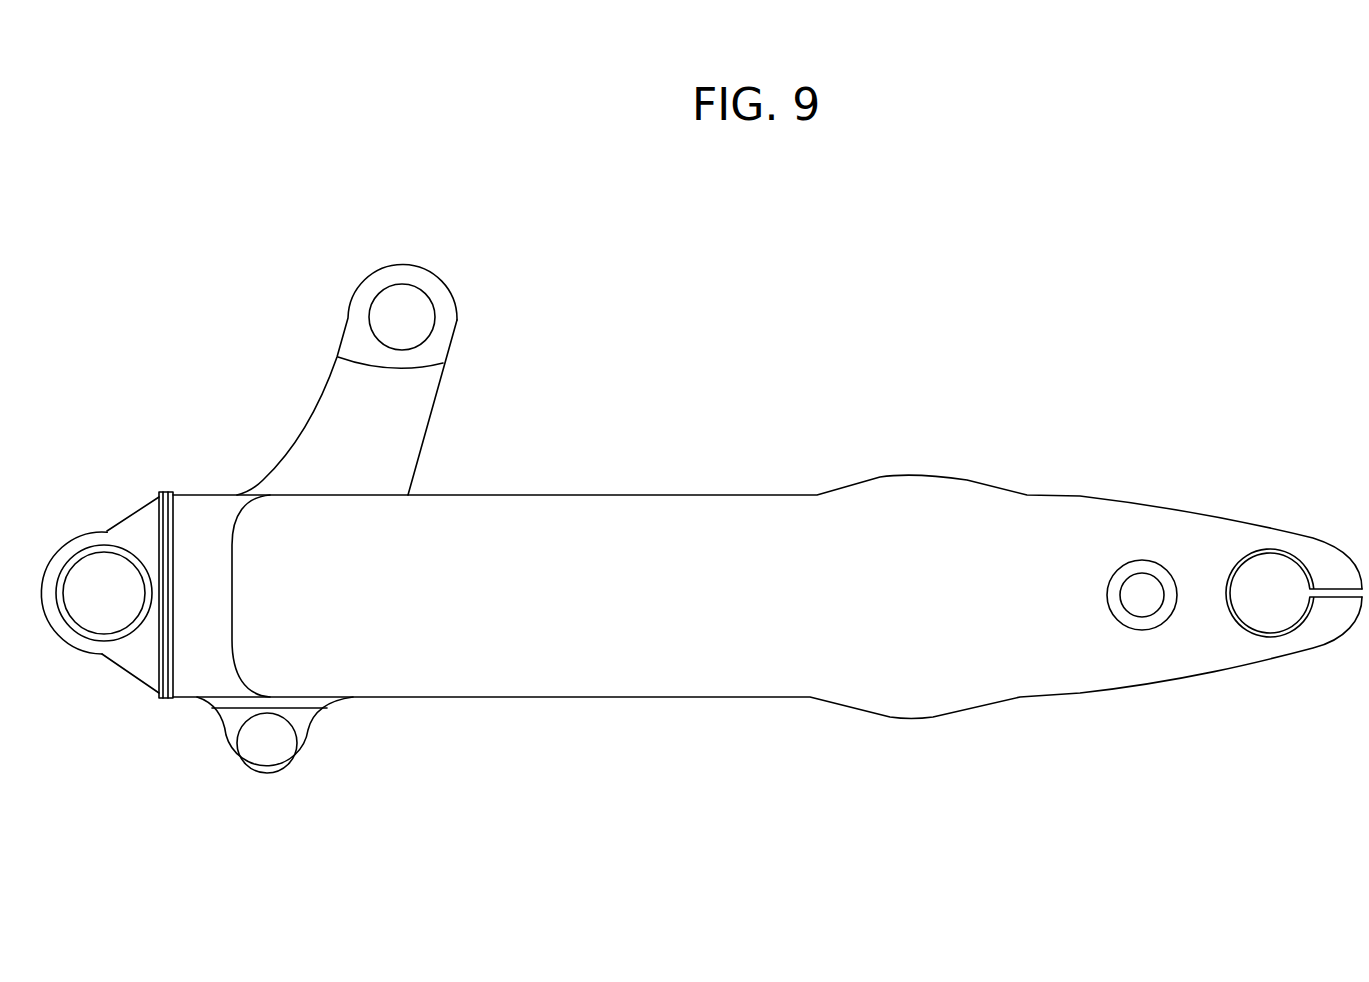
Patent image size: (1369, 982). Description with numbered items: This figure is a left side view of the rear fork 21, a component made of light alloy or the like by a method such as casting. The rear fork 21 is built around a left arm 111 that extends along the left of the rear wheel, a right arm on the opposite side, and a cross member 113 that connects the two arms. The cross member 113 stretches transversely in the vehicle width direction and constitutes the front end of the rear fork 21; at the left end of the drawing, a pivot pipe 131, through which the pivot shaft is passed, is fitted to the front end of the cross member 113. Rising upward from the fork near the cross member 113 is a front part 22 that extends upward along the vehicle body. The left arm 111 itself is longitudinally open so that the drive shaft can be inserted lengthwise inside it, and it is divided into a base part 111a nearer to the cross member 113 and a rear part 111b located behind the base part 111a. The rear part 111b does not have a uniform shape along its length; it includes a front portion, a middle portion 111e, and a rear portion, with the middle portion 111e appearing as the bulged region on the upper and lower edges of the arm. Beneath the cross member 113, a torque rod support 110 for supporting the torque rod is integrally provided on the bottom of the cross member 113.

The rear fork 21 is at (701, 532).
The front part 22 is at (420, 403).
The torque rod support 110 is at (308, 722).
The left arm 111 is at (718, 512).
The base part 111a is at (438, 665).
The rear part 111b is at (1060, 670).
The middle portion 111e is at (922, 483).
The cross member 113 is at (212, 520).
The pivot pipe 131 is at (80, 545).